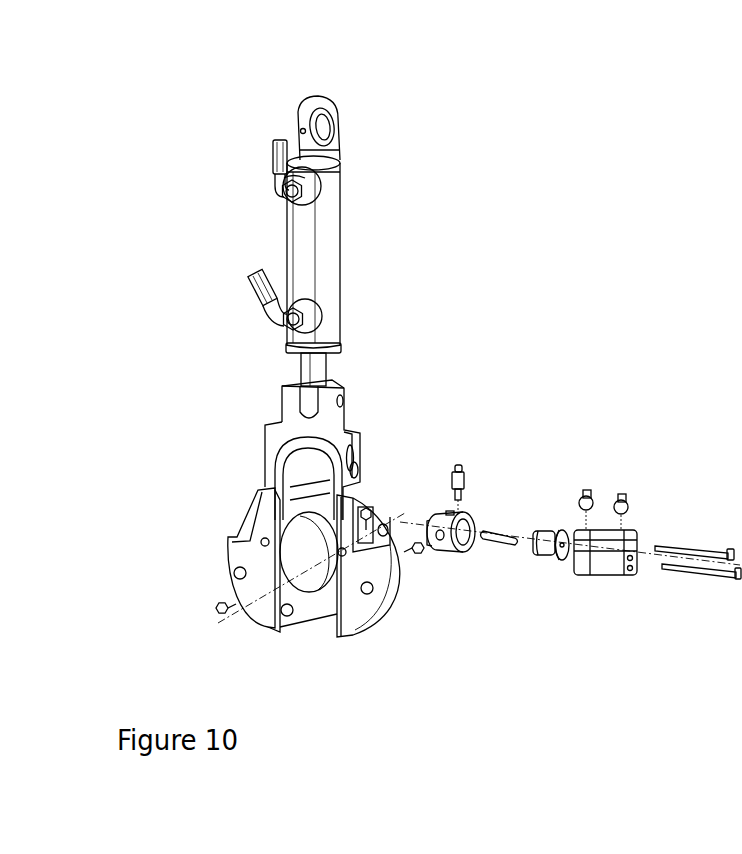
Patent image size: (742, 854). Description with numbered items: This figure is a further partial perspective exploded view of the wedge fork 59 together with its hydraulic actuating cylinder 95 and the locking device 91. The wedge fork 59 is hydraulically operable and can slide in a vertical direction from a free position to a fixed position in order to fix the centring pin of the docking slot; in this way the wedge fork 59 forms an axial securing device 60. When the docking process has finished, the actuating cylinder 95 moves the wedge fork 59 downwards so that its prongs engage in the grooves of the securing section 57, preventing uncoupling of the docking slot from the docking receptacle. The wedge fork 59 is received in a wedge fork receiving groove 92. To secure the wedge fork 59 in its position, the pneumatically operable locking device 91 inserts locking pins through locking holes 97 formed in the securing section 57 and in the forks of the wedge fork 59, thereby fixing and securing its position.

The axial securing device 60 is at (386, 277).
The actuating cylinder 95 is at (330, 206).
The wedge fork 59 is at (273, 440).
The wedge fork receiving groove 92 is at (278, 612).
The securing section 57 is at (367, 493).
The locking hole 97 is at (355, 440).
The locking device 91 is at (600, 490).